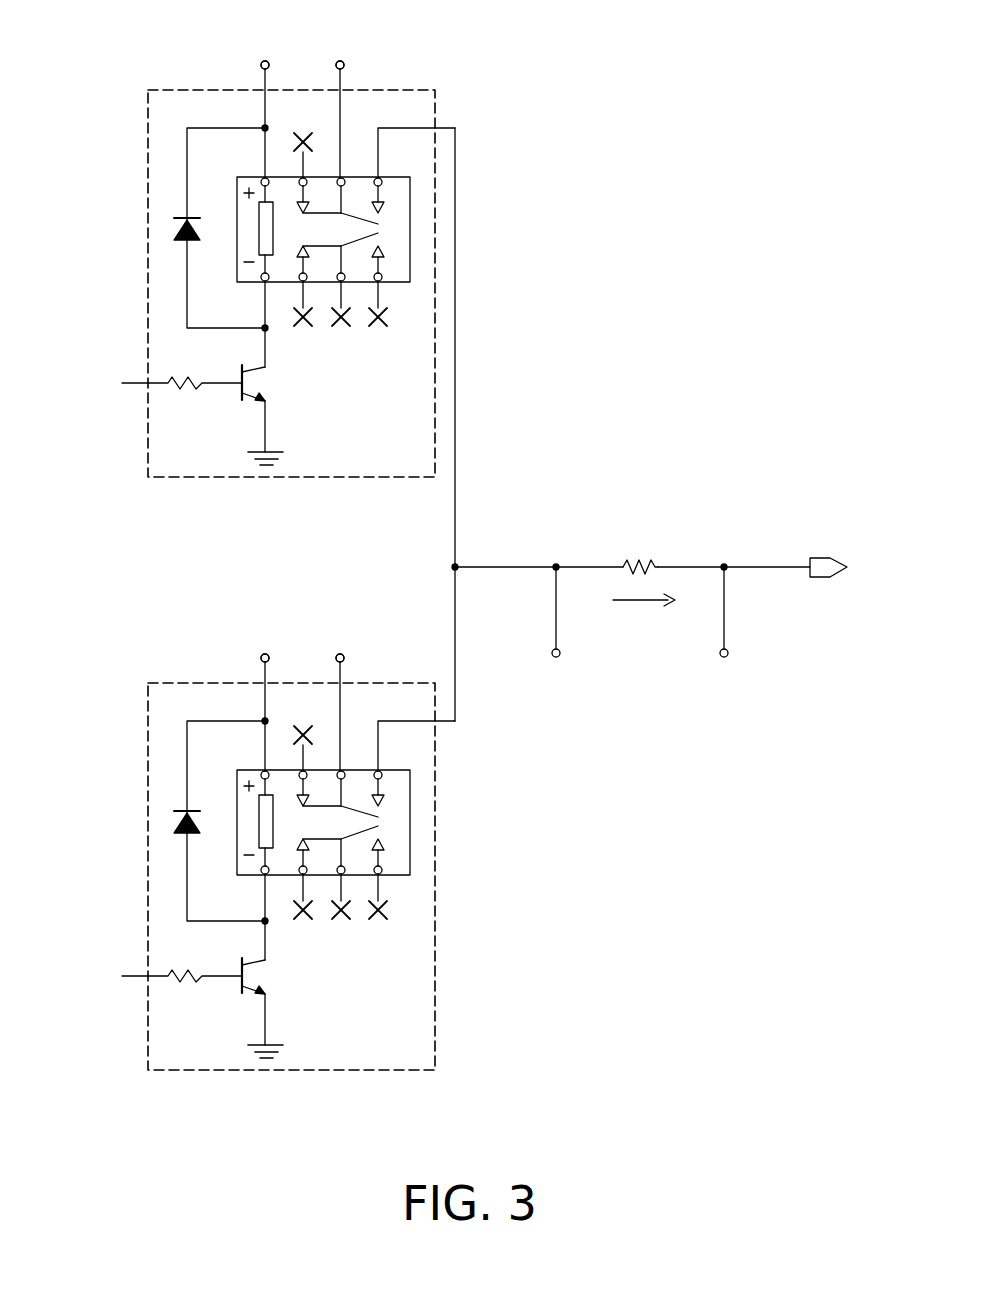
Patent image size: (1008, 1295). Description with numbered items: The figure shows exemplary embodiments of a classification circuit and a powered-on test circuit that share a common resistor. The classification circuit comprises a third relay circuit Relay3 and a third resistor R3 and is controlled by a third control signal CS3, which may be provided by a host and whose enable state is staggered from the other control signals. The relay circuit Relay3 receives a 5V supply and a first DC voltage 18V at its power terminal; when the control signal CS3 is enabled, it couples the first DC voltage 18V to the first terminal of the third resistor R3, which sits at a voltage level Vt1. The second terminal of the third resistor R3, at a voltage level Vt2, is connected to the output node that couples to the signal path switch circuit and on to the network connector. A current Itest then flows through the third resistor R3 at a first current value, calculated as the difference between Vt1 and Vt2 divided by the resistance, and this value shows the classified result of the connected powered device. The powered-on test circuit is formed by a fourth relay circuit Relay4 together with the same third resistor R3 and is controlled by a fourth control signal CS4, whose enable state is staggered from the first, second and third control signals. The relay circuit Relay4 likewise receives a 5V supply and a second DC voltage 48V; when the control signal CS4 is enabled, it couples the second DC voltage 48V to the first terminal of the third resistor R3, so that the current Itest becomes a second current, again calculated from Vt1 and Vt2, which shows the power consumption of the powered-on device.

The third relay circuit Relay3 is at (173, 88).
The fourth relay circuit Relay4 is at (173, 681).
The third control signal CS3 is at (146, 382).
The fourth control signal CS4 is at (146, 975).
The 5V supply voltage 5V is at (265, 346).
The first DC voltage 18V is at (349, 49).
The second DC voltage 48V is at (349, 642).
The third resistor R3 is at (646, 558).
The voltage level at first terminal of third resistor Vt1 is at (557, 632).
The voltage level at second terminal of third resistor Vt2 is at (727, 632).
The test current Itest is at (644, 616).